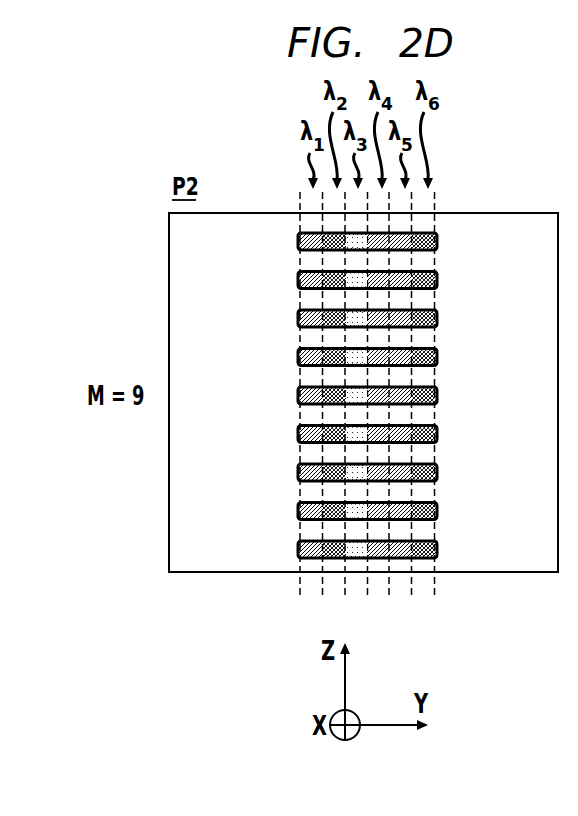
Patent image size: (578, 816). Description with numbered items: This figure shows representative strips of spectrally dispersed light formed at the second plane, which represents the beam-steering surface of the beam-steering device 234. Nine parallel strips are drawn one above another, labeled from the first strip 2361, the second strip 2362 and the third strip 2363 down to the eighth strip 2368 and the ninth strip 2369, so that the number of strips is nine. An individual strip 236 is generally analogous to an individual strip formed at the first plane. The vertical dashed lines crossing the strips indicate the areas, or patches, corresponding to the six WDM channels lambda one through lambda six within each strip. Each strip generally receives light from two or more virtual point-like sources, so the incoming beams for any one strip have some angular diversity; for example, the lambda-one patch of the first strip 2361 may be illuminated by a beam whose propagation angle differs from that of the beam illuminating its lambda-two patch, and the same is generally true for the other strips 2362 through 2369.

The beam-steering device 234 is at (319, 434).
The strip of light 236 is at (417, 399).
The first strip of light 2361 is at (480, 239).
The second strip of light 2362 is at (480, 278).
The third strip of light 2363 is at (480, 316).
The eighth strip of light 2368 is at (480, 508).
The ninth strip of light 2369 is at (480, 547).